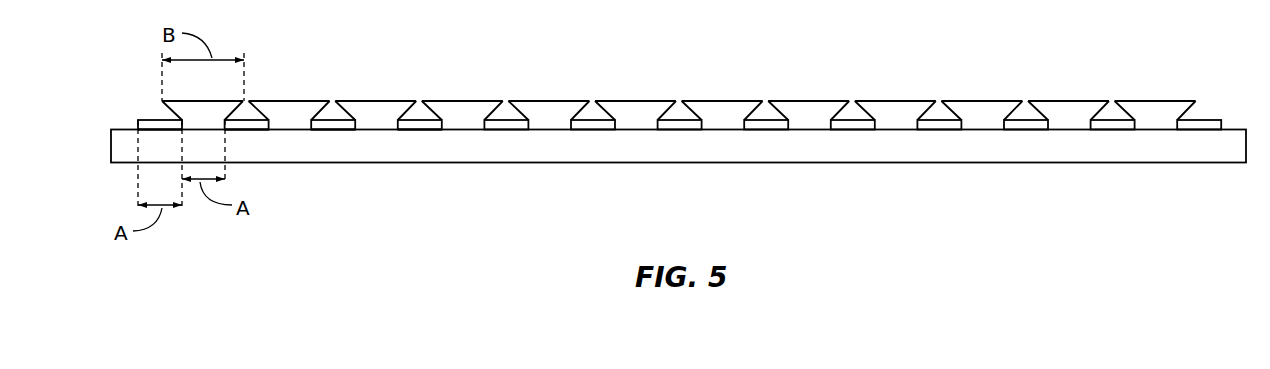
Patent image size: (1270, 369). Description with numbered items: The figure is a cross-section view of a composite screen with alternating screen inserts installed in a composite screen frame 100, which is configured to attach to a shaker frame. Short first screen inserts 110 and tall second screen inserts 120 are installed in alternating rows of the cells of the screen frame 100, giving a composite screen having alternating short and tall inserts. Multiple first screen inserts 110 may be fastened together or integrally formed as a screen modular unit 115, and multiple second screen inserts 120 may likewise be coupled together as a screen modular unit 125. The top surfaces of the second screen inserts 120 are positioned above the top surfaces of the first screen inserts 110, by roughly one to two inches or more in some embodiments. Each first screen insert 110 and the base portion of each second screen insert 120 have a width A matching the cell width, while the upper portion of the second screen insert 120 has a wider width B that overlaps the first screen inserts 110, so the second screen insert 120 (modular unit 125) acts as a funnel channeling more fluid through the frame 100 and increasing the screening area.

The composite screen frame 100 is at (552, 150).
The first screen insert 110 is at (335, 128).
The screen modular unit 115 is at (162, 119).
The second screen insert 120 is at (295, 115).
The screen modular unit 125 is at (285, 94).